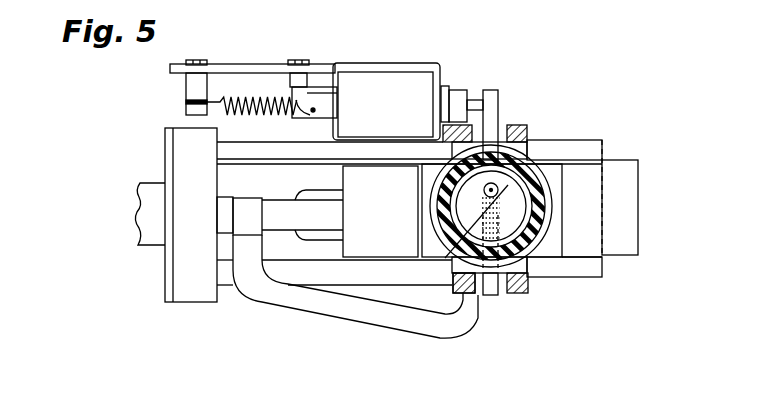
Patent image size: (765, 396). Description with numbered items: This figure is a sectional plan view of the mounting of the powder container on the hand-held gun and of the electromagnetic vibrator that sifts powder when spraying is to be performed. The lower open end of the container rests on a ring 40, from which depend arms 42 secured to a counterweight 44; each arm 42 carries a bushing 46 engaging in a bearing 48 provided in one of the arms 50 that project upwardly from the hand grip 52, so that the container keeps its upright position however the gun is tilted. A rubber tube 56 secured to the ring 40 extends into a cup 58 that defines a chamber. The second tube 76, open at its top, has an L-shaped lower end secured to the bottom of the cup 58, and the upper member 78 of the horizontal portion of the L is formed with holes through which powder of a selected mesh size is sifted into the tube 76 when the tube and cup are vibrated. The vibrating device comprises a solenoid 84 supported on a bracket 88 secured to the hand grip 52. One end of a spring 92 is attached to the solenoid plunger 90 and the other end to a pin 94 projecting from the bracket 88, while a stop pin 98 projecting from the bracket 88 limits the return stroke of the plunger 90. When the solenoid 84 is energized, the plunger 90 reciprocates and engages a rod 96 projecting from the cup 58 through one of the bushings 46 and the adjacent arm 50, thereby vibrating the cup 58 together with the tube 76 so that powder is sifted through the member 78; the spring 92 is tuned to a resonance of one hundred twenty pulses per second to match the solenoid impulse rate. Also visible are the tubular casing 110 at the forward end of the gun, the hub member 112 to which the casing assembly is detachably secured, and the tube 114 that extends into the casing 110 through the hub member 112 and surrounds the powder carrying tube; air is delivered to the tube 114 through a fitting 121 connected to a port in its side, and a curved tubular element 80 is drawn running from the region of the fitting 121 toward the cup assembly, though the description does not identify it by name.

The ring 40 is at (445, 190).
The arms 42 is at (456, 283).
The counterweight 44 is at (393, 224).
The bushing 46 is at (513, 123).
The bearing 48 is at (511, 125).
The arms 50 is at (556, 140).
The hand grip 52 is at (590, 276).
The rubber tube 56 is at (502, 205).
The cup 58 is at (506, 217).
The second tube 76 is at (522, 184).
The upper member 78 is at (445, 258).
The conduit tube 80 is at (445, 334).
The solenoid 84 is at (398, 113).
The bracket 88 is at (378, 66).
The solenoid plunger 90 is at (322, 98).
The spring 92 is at (248, 100).
The pin 94 is at (193, 88).
The rod 96 is at (494, 92).
The stop pin 98 is at (297, 60).
The tubular casing 110 is at (152, 237).
The hub member 112 is at (173, 288).
The tube 114 is at (224, 208).
The fitting 121 is at (251, 216).